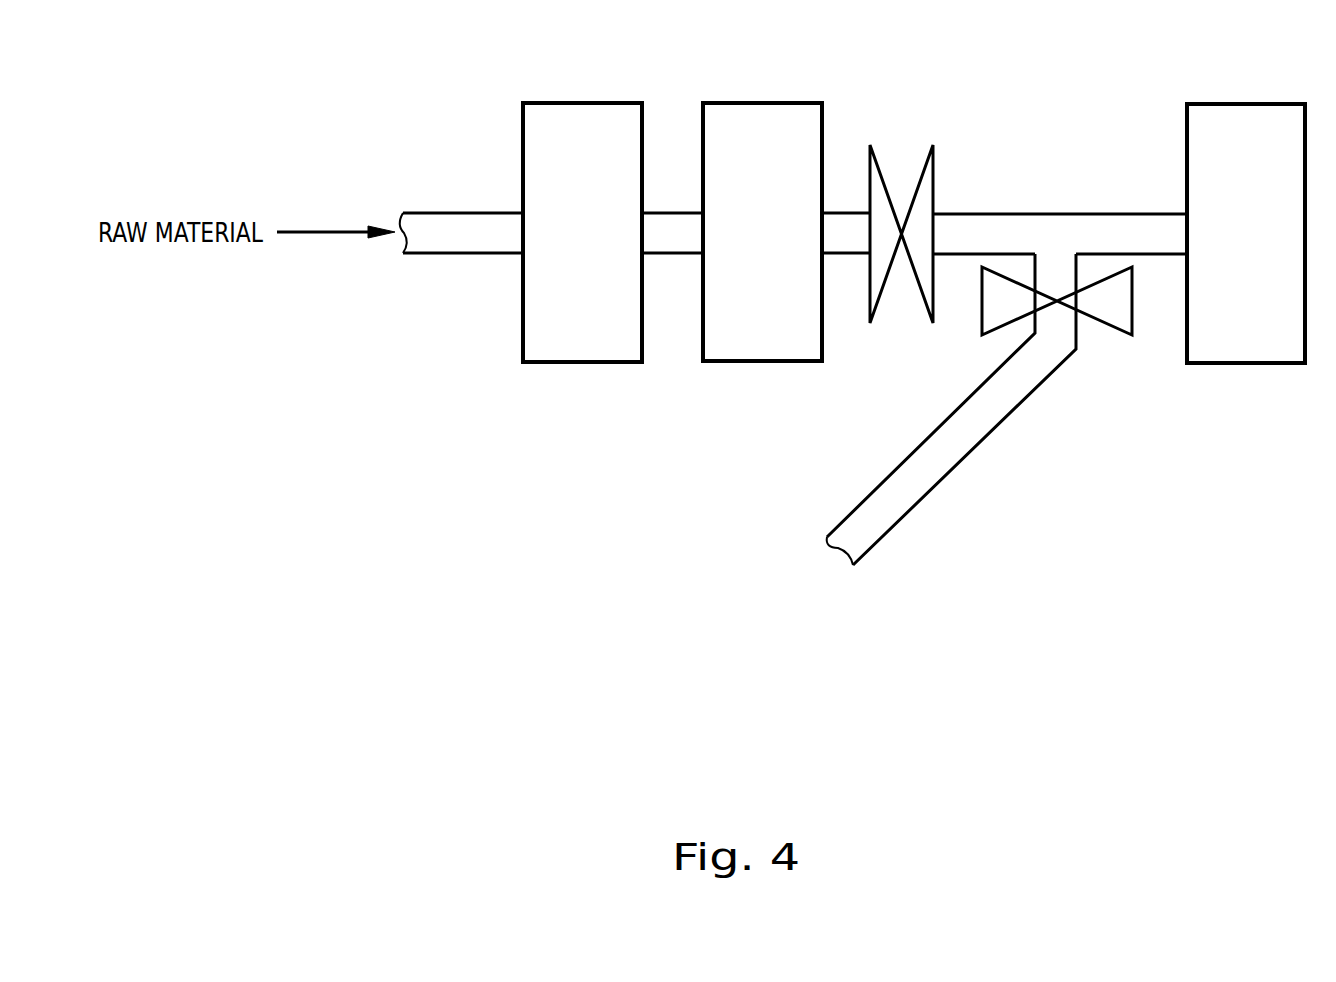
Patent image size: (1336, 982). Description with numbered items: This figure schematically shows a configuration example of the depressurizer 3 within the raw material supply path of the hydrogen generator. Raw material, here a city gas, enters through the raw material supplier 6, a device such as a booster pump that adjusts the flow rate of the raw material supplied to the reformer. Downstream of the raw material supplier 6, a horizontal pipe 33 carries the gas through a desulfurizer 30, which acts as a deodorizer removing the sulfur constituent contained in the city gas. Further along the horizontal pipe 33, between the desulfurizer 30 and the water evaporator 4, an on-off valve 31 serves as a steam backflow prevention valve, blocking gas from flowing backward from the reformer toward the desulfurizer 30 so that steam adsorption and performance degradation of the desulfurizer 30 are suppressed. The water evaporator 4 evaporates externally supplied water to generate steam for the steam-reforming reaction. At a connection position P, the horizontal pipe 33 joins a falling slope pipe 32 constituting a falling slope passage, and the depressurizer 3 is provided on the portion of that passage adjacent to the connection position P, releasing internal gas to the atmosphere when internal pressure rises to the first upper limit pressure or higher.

The raw material supplier 6 is at (583, 103).
The desulfurizer 30 is at (764, 103).
The on-off valve 31 is at (920, 168).
The horizontal pipe 33 is at (1110, 213).
The connection position P is at (1054, 218).
The water evaporator 4 is at (1250, 104).
The depressurizer 3 is at (1102, 327).
The falling slope pipe 32 is at (960, 462).